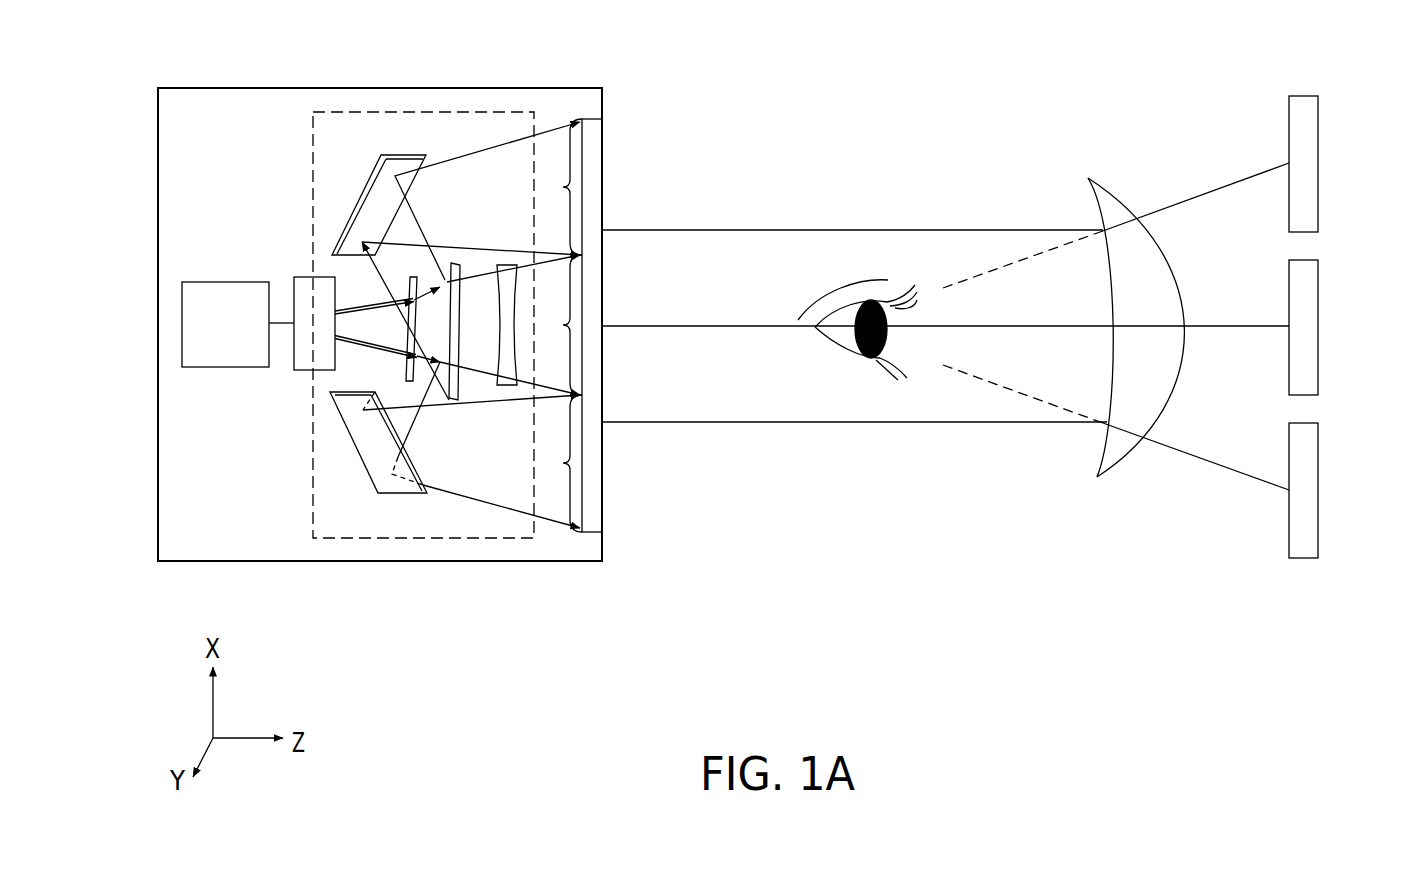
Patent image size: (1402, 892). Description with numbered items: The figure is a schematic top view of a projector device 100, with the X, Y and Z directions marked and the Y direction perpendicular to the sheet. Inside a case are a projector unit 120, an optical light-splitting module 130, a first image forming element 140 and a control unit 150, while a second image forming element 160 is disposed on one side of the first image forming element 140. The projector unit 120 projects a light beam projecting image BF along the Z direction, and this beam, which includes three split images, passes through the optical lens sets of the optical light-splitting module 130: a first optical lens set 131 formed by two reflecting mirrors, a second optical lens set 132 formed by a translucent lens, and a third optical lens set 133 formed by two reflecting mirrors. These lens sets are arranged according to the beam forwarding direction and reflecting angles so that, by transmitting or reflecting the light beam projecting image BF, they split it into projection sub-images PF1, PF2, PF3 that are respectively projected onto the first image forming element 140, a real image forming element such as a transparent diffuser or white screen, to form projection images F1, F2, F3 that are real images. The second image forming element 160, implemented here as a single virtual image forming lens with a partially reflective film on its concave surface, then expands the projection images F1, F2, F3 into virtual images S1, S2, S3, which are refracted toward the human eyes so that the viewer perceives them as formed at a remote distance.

The projector device 100 is at (1243, 623).
The projector unit 120 is at (303, 372).
The optical light-splitting module 130 is at (335, 540).
The first optical lens set 131 is at (455, 402).
The second optical lens set 132 is at (505, 385).
The third optical lens set 133 is at (462, 262).
The first image forming element 140 is at (597, 130).
The control unit 150 is at (238, 367).
The second image forming element 160 is at (1120, 195).
The light beam projecting image BF is at (367, 320).
The projection sub-image PF1 is at (500, 168).
The projection sub-image PF2 is at (528, 290).
The projection sub-image PF3 is at (522, 477).
The projection image F1 is at (560, 187).
The projection image F2 is at (560, 325).
The projection image F3 is at (560, 463).
The virtual image S1 is at (1310, 128).
The virtual image S2 is at (1310, 292).
The virtual image S3 is at (1310, 455).